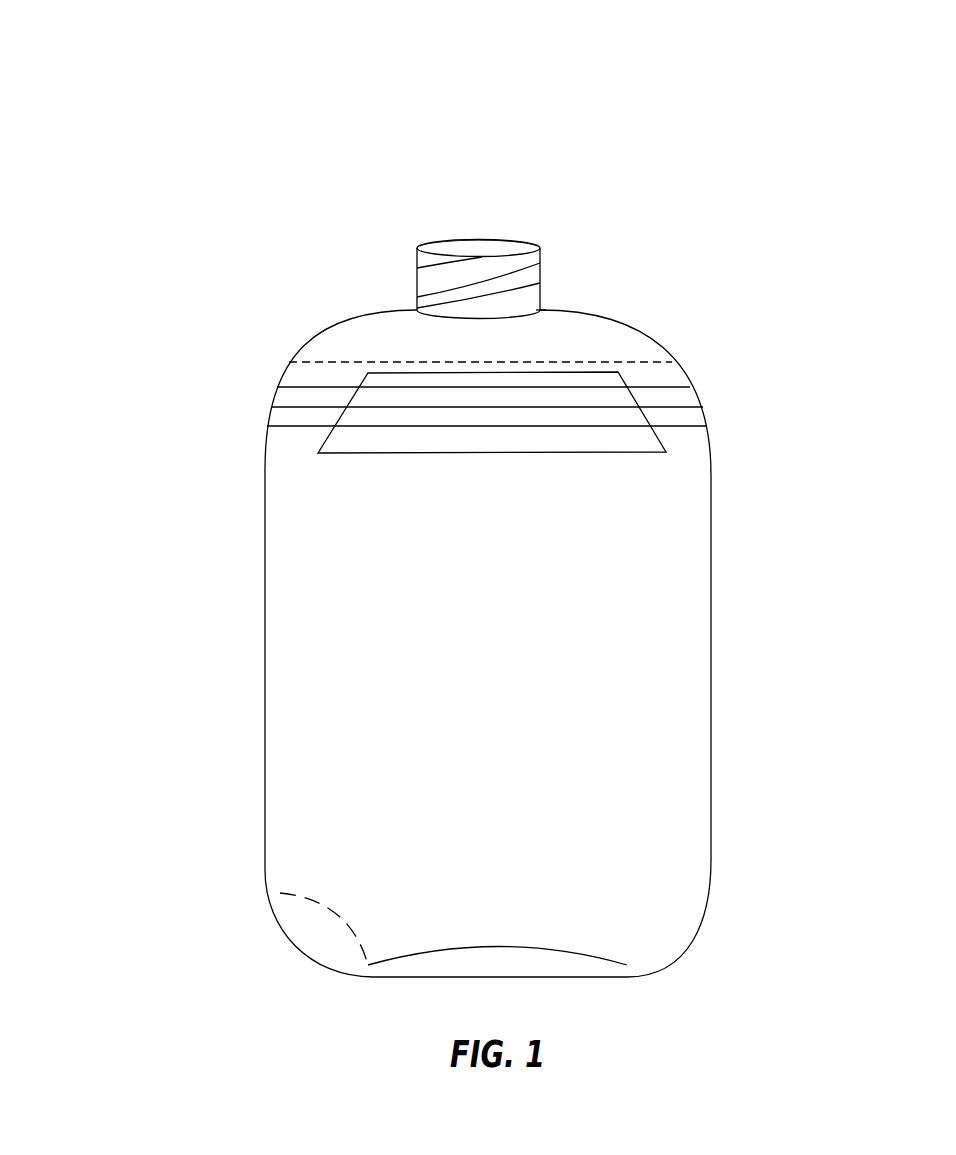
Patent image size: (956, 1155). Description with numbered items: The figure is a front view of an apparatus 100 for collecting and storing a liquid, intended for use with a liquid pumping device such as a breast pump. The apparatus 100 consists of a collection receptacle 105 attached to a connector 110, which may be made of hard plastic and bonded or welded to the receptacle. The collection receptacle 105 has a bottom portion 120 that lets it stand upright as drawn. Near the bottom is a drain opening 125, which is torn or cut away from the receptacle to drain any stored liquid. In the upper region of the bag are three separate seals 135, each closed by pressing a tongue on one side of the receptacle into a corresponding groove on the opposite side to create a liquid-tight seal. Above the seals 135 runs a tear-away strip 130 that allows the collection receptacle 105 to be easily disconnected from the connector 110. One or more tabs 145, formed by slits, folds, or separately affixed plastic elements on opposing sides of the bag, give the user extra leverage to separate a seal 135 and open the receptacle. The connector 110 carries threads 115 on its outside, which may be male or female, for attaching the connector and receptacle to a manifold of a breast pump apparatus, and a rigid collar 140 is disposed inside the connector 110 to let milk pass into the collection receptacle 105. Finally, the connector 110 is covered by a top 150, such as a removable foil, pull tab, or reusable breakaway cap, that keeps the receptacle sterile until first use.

The apparatus 100 is at (140, 86).
The collection receptacle 105 is at (702, 732).
The connector 110 is at (418, 274).
The threads 115 is at (541, 268).
The bottom portion 120 is at (551, 945).
The drain opening 125 is at (326, 898).
The tear-away strip 130 is at (340, 362).
The seals 135 is at (310, 387).
The rigid collar 140 is at (552, 309).
The tabs 145 is at (665, 437).
The top 150 is at (505, 248).